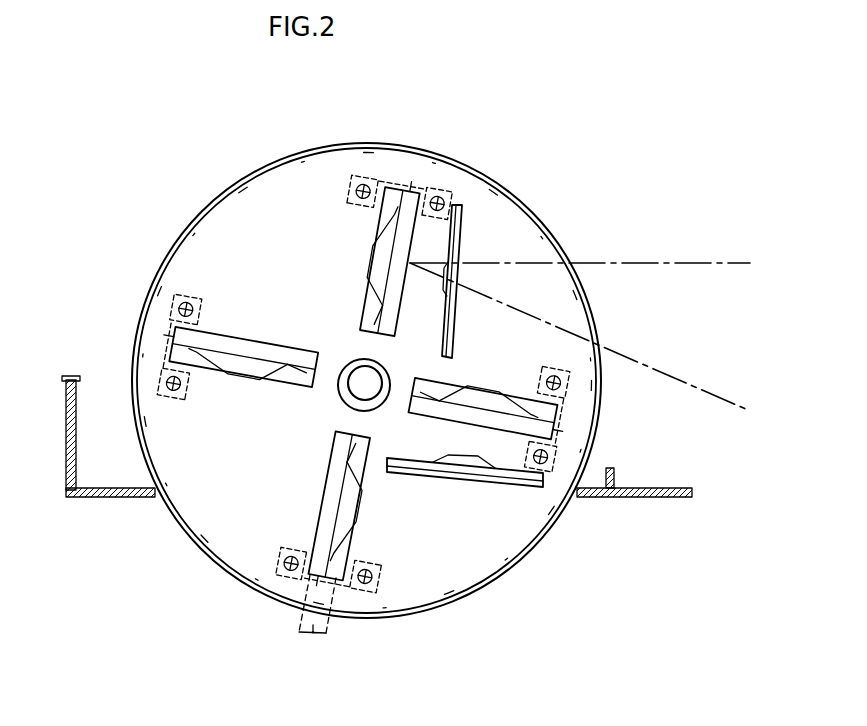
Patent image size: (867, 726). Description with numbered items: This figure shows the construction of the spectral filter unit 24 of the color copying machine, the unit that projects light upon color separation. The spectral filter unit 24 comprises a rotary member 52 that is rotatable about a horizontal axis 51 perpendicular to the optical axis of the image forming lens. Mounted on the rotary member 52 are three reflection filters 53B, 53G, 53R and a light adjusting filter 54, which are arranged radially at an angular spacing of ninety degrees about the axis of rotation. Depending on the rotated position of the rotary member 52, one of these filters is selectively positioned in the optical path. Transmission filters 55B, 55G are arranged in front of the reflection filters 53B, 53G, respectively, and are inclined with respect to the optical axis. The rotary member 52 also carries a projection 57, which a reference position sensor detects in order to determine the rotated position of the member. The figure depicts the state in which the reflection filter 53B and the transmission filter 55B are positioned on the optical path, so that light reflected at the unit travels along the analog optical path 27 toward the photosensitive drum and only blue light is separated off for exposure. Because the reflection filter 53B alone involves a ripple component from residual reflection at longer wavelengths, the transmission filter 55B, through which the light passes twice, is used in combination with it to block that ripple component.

The spectral filter unit 24 is at (207, 196).
The analog optical path 27 is at (663, 264).
The horizontal axis 51 is at (362, 390).
The rotary member 52 is at (477, 567).
The reflection filter 53B is at (402, 198).
The reflection filter 53G is at (560, 436).
The reflection filter 53R is at (333, 505).
The light adjusting filter 54 is at (233, 342).
The transmission filter 55B is at (463, 210).
The transmission filter 55G is at (532, 482).
The projection 57 is at (318, 634).